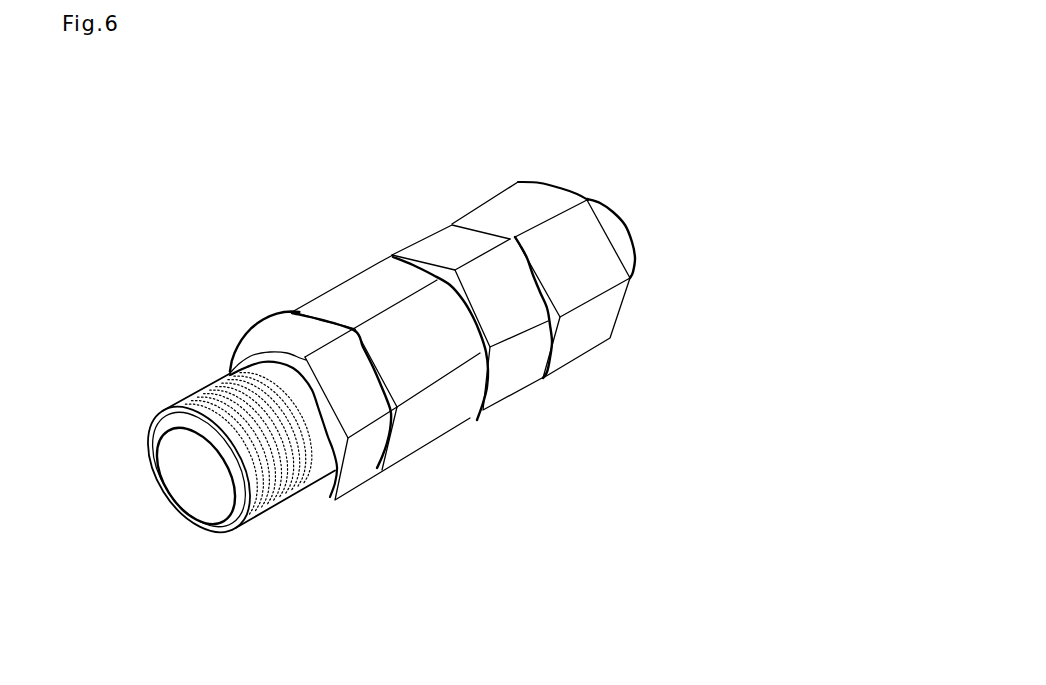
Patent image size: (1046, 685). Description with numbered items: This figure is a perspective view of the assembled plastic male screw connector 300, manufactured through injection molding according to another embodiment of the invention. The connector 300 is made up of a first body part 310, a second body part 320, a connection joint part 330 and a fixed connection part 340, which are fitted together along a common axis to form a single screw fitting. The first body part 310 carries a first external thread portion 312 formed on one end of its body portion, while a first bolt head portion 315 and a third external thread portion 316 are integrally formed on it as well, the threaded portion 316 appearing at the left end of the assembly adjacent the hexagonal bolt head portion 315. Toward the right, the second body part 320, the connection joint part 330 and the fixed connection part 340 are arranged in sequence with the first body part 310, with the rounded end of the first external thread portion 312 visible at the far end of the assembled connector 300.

The plastic male screw connector 300 is at (689, 209).
The first body part 310 is at (372, 519).
The first external thread portion 312 is at (606, 194).
The first bolt head portion 315 is at (279, 331).
The third external thread portion 316 is at (194, 389).
The second body part 320 is at (537, 427).
The connection joint part 330 is at (454, 467).
The fixed connection part 340 is at (621, 377).